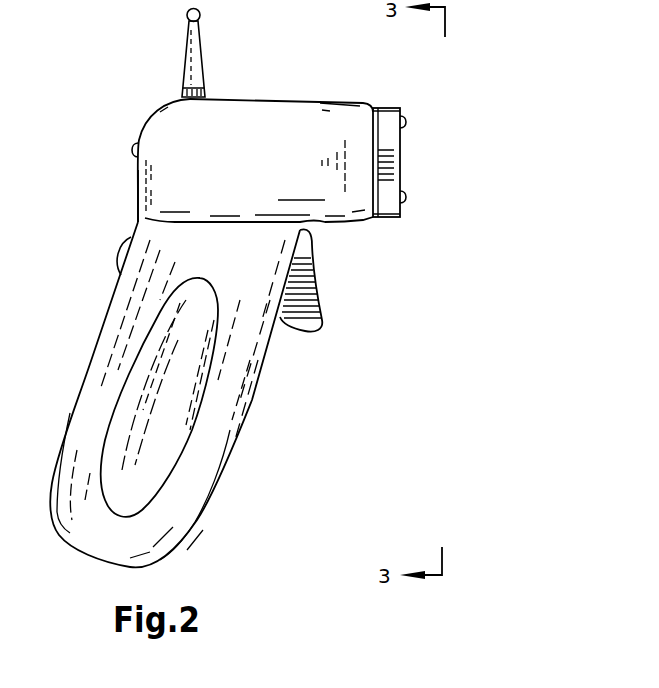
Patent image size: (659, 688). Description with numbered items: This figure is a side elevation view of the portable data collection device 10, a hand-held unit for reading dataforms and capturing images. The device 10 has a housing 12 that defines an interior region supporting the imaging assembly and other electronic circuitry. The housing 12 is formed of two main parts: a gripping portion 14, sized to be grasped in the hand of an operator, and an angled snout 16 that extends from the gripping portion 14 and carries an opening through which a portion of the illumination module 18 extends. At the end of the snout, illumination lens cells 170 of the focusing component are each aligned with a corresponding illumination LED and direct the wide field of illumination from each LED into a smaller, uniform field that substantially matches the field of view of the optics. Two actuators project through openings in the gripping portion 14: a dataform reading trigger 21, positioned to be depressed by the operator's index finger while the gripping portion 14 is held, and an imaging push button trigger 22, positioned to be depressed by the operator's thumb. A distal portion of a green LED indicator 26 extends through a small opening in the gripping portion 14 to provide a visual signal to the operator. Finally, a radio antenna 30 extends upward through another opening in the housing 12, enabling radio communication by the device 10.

The portable data collection device 10 is at (32, 116).
The housing 12 is at (124, 204).
The gripping portion 14 is at (92, 360).
The angled snout 16 is at (260, 97).
The illumination module 18 is at (392, 155).
The dataform reading trigger 21 is at (310, 295).
The imaging push button trigger 22 is at (123, 247).
The green LED indicator 26 is at (133, 153).
The radio antenna 30 is at (190, 58).
The illumination lens cell 170 is at (405, 118).